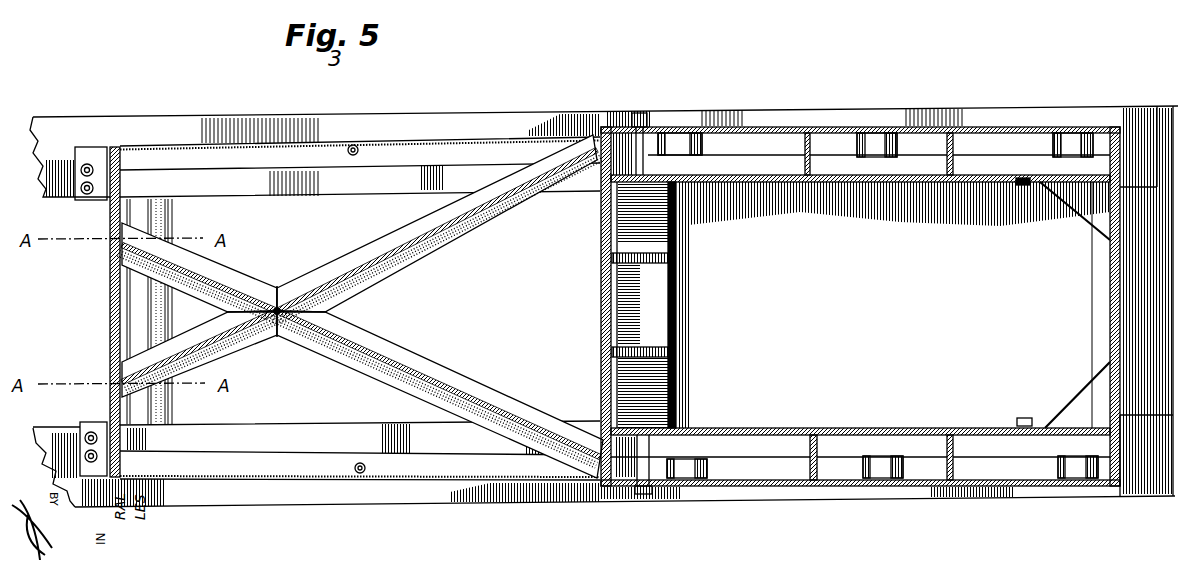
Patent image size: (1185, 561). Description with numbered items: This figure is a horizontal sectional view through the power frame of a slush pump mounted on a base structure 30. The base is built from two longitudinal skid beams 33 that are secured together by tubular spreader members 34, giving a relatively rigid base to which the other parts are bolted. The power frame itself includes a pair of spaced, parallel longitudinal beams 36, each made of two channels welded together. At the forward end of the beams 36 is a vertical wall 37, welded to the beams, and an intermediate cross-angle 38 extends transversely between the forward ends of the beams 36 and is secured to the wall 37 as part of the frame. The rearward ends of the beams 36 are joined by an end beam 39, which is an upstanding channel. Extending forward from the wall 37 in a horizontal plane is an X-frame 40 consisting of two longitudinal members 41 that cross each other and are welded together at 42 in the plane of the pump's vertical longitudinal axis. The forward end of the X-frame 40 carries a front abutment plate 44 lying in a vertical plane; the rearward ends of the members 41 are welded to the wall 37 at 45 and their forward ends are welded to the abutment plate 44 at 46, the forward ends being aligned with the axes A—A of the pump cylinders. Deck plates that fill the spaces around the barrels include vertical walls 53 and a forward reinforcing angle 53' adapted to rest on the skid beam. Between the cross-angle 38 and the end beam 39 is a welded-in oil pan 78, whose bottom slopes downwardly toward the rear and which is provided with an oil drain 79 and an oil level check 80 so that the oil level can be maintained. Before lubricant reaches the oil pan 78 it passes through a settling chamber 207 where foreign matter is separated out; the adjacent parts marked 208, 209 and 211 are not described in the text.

The base structure 30 is at (468, 506).
The longitudinal skid beam 33 is at (272, 118).
The tubular spreader member 34 is at (163, 401).
The longitudinal beam 36 is at (845, 135).
The vertical wall 37 is at (601, 320).
The intermediate cross-angle 38 is at (617, 390).
The end beam 39 is at (1110, 293).
The X-frame 40 is at (302, 266).
The longitudinal member 41 is at (372, 252).
The weld 42 is at (277, 336).
The abutment plate 44 is at (110, 303).
The weld 45 is at (595, 126).
The weld 46 is at (110, 227).
The vertical wall 53 is at (360, 309).
The forward reinforcing angle 53' is at (360, 310).
The oil pan 78 is at (966, 292).
The oil drain 79 is at (1018, 184).
The oil level check 80 is at (1030, 186).
The settling chamber 207 is at (660, 229).
The vertical strip 208 is at (678, 318).
The cross bar 209 is at (650, 250).
The bolt 211 is at (648, 126).